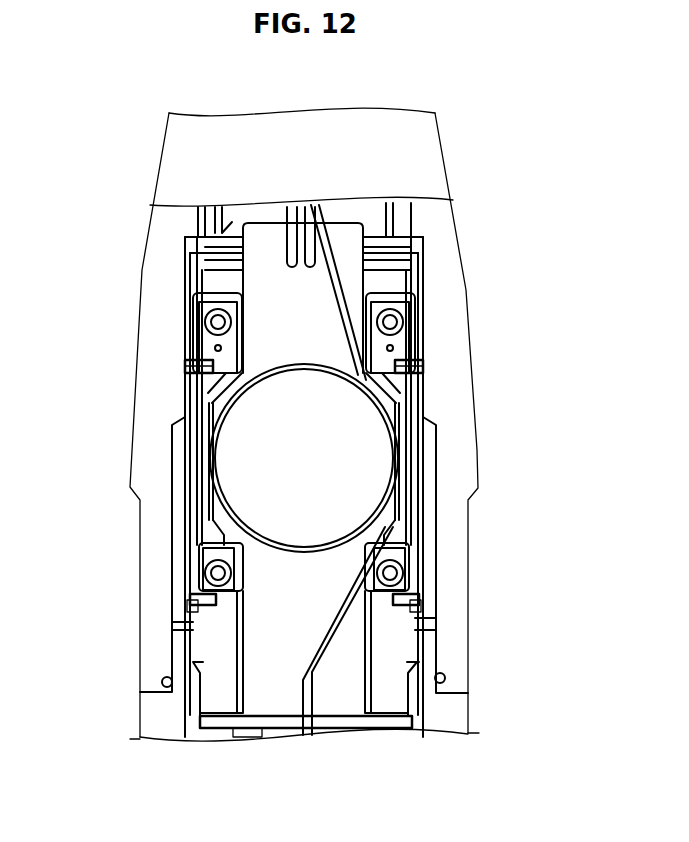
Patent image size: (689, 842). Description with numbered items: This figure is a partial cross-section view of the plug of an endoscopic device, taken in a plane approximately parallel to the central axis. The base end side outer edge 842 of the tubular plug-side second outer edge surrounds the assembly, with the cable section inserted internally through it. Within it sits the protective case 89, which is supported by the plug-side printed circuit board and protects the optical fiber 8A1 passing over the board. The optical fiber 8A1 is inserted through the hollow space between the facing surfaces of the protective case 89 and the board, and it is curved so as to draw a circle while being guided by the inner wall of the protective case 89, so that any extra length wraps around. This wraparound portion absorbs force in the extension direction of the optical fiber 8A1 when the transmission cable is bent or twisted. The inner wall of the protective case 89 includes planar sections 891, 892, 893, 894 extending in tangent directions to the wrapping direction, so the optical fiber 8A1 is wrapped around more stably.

The base end side outer edge 842 is at (433, 158).
The protective case 89 is at (210, 282).
The planar section 894 is at (190, 380).
The planar section 891 is at (412, 378).
The planar section 893 is at (200, 539).
The planar section 892 is at (383, 540).
The optical fiber 8A1 is at (320, 650).